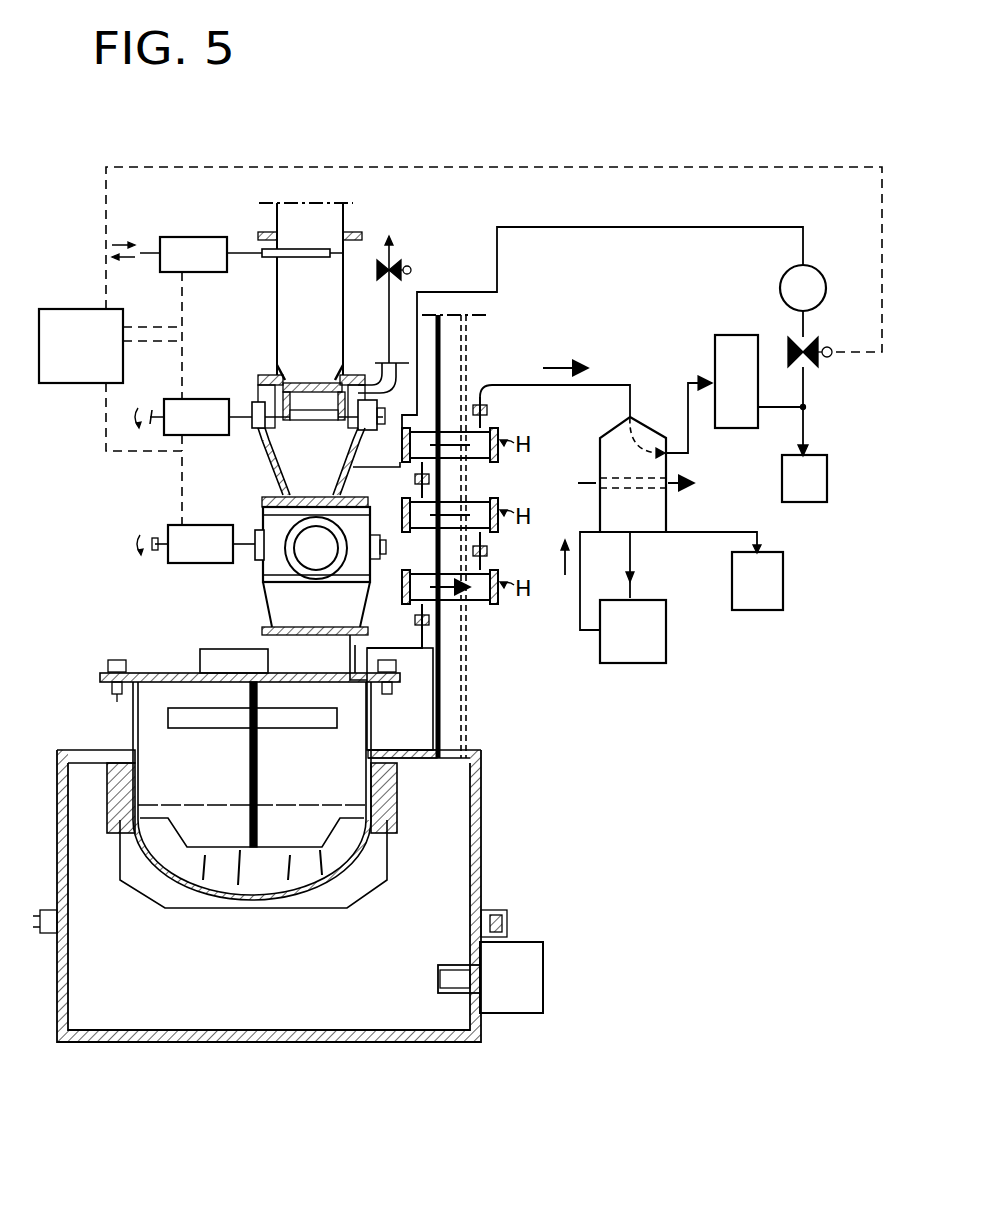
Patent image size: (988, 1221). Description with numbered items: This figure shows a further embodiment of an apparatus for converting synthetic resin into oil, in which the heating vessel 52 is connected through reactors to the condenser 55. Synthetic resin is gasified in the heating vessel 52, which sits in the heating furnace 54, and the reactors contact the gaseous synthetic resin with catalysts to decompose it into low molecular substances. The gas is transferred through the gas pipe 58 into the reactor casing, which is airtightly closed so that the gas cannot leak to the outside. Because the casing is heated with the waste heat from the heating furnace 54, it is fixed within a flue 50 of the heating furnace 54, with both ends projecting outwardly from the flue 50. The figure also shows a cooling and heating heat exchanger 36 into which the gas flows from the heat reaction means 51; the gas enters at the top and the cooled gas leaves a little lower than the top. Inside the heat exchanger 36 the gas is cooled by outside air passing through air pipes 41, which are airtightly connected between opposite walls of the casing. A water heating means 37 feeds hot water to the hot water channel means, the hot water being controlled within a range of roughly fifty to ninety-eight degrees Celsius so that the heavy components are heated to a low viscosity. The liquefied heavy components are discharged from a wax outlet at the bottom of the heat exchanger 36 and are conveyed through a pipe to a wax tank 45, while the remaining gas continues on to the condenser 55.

The heat exchanger 36 is at (633, 454).
The water heating means 37 is at (666, 656).
The air pipes 41 is at (600, 478).
The wax tank 45 is at (783, 600).
The flue 50 is at (460, 690).
The heat reaction means 51 is at (487, 841).
The heating vessel 52 is at (330, 886).
The heating furnace 54 is at (288, 896).
The condenser 55 is at (735, 335).
The gas pipe 58 is at (520, 385).